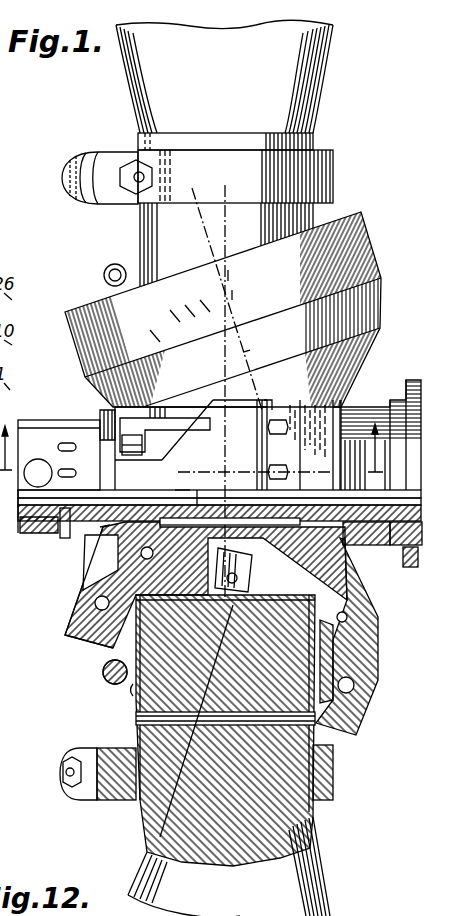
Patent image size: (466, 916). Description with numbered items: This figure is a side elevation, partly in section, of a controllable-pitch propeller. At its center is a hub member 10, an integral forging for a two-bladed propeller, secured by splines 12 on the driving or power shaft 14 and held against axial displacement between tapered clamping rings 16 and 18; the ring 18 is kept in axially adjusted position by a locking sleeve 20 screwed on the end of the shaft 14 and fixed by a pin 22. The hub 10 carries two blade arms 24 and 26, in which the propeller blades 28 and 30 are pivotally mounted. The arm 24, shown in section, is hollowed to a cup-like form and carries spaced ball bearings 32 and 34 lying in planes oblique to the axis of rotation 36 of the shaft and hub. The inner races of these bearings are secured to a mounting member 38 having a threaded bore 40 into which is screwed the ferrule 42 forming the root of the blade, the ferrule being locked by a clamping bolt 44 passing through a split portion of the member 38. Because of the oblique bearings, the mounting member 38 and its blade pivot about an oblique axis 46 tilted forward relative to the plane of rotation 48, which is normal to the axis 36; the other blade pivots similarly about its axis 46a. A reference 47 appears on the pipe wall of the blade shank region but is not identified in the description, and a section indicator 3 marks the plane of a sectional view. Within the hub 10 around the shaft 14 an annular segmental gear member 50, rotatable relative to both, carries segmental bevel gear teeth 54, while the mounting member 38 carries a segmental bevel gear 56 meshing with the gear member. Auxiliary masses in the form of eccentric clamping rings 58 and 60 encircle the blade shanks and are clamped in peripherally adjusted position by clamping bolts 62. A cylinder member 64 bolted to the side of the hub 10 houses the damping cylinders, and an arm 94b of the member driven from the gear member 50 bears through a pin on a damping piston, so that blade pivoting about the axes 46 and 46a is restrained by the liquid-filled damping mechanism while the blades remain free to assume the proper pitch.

The hub member 10 is at (368, 365).
The splines 12 is at (290, 512).
The driving or power shaft 14 is at (348, 512).
The tapered clamping ring 16 is at (345, 549).
The tapered clamping ring 18 is at (100, 527).
The locking sleeve 20 is at (76, 540).
The pin 22 is at (62, 537).
The blade arm 24 is at (370, 702).
The blade arm 26 is at (375, 250).
The propeller blade 28 is at (305, 872).
The propeller blade 30 is at (318, 55).
The ball bearing 32 is at (375, 652).
The ball bearing 34 is at (347, 618).
The axis of rotation 36 is at (240, 475).
The mounting member 38 is at (350, 640).
The threaded bore 40 is at (322, 596).
The ferrule 42 is at (133, 688).
The clamping bolt 44 is at (108, 268).
The oblique axis 46 is at (137, 735).
The oblique axis 46a is at (243, 352).
The pipe wall 47 is at (232, 295).
The plane of rotation 48 is at (228, 281).
The annular segmental gear member 50 is at (184, 512).
The segmental set of bevel gear teeth 54 is at (197, 512).
The segmental bevel gear 56 is at (251, 580).
The eccentric clamping ring 58 is at (333, 760).
The eccentric clamping ring 60 is at (298, 172).
The clamping bolt 62 is at (122, 170).
The cylinder member 64 is at (268, 398).
The arm 94b is at (168, 418).
The section line 3 is at (194, 438).